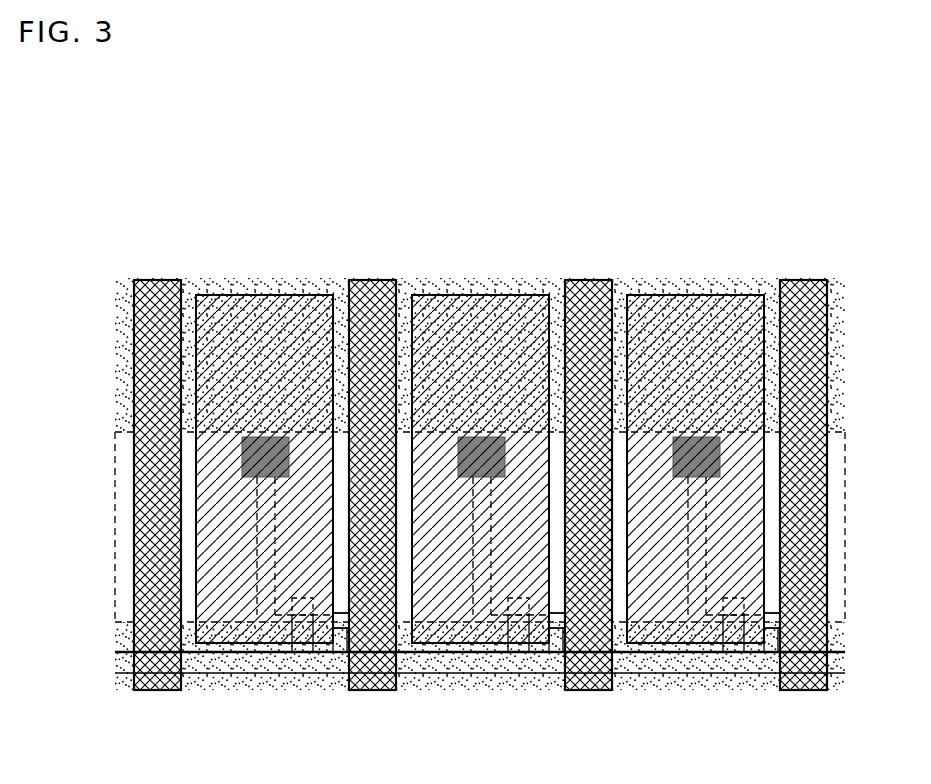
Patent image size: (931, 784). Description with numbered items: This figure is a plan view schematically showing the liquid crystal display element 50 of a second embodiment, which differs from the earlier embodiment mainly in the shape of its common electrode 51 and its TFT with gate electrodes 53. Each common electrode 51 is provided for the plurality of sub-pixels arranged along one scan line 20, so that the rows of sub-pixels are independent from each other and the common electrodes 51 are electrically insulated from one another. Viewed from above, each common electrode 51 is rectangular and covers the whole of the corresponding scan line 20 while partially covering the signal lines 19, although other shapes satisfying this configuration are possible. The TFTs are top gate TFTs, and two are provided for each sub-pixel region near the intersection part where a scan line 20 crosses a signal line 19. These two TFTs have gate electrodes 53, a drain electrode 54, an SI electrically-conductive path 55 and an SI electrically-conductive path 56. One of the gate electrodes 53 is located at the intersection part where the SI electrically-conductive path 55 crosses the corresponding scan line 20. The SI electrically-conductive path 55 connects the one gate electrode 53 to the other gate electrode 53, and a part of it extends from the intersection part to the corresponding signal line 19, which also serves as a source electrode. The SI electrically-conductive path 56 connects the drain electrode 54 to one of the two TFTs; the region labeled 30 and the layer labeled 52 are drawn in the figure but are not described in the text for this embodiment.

The liquid crystal display element 50 is at (456, 455).
The common electrode 51 is at (188, 280).
The pixel electrode 30 is at (247, 297).
The insulating layer 52 is at (309, 432).
The signal line 19 is at (373, 280).
The drain electrode 54 is at (245, 455).
The SI electrically-conductive path 56 is at (258, 573).
The SI electrically-conductive path 55 is at (343, 628).
The gate electrode 53 is at (290, 655).
The scan line 20 is at (642, 660).